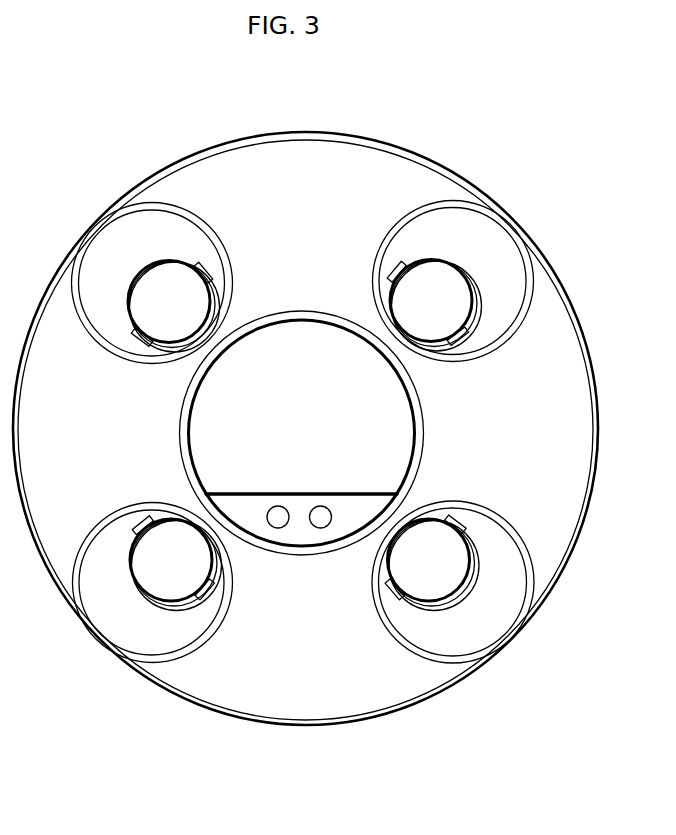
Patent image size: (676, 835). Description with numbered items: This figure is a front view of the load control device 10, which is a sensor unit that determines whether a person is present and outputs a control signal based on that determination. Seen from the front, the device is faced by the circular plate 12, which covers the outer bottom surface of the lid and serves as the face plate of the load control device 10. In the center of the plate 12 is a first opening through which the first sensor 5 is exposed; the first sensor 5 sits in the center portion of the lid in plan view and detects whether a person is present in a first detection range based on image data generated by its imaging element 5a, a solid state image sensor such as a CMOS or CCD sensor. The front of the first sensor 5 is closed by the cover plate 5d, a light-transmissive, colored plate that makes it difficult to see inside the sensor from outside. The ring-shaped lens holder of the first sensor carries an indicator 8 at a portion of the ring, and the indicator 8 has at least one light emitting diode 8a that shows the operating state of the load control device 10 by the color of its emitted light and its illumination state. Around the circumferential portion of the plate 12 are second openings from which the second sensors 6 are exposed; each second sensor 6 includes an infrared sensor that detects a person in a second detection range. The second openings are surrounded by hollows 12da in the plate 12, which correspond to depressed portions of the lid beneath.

The load control device 10 is at (549, 139).
The plate 12 is at (292, 697).
The hollows 12da is at (478, 617).
The second sensors 6 is at (155, 297).
The first sensor 5 is at (273, 427).
The imaging element 5a is at (296, 410).
The cover plate 5d is at (380, 428).
The indicator 8 is at (293, 526).
The light emitting diode 8a is at (320, 521).